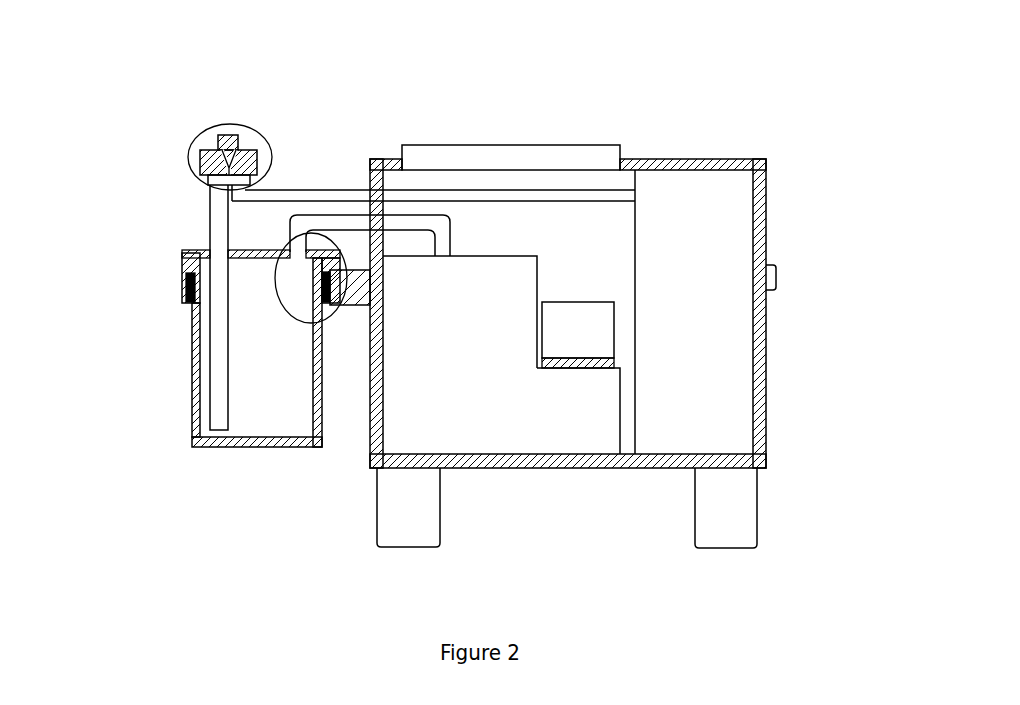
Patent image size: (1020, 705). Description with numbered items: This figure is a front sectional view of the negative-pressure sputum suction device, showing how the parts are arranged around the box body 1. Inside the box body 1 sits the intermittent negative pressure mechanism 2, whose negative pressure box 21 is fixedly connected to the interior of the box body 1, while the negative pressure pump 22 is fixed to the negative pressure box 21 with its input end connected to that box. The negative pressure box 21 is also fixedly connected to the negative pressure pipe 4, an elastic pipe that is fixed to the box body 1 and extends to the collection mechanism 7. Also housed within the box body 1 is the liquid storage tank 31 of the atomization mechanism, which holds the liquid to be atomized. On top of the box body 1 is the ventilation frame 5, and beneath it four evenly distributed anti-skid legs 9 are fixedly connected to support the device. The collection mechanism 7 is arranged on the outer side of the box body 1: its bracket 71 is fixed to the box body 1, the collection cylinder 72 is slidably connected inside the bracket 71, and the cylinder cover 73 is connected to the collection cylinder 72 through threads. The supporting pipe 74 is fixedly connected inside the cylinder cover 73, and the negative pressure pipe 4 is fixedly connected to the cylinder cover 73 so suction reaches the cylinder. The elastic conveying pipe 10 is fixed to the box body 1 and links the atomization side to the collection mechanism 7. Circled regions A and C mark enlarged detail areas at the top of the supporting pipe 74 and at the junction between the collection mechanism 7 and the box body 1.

The box body 1 is at (735, 455).
The intermittent negative pressure mechanism 2 is at (563, 282).
The negative pressure box 21 is at (595, 408).
The negative pressure pump 22 is at (585, 340).
The liquid storage tank 31 is at (710, 220).
The negative pressure pipe 4 is at (430, 223).
The ventilation frame 5 is at (602, 155).
The collection mechanism 7 is at (185, 338).
The bracket 71 is at (188, 300).
The collection cylinder 72 is at (197, 422).
The cylinder cover 73 is at (185, 253).
The supporting pipe 74 is at (217, 388).
The anti-skid leg 9 is at (395, 522).
The conveying pipe 10 is at (623, 198).
The valve detail A is at (203, 152).
The connection detail C is at (288, 247).